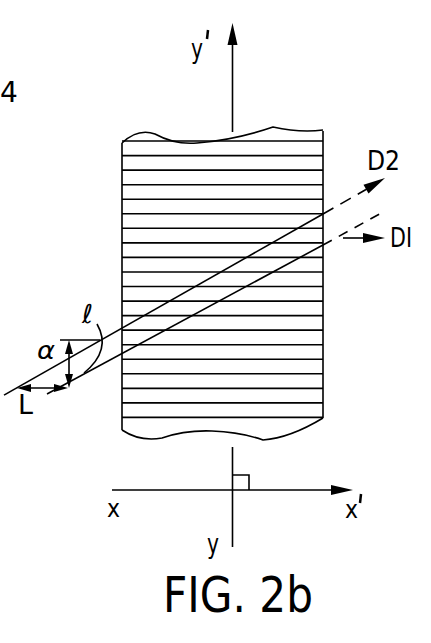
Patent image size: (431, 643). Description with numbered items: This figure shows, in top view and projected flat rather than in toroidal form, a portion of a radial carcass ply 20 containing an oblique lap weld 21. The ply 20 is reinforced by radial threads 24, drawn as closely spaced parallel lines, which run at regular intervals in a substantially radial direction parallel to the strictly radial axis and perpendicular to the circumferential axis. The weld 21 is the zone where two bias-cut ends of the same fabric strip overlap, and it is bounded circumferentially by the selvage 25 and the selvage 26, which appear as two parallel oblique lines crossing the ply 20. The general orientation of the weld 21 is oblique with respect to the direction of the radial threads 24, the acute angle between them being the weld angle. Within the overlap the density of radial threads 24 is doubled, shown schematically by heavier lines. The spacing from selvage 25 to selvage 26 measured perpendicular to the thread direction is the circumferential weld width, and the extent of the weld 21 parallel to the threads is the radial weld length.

The radial carcass ply 20 is at (283, 94).
The oblique lap weld 21 is at (298, 246).
The radial threads 24 is at (135, 196).
The selvage 25 is at (157, 337).
The selvage 26 is at (150, 313).